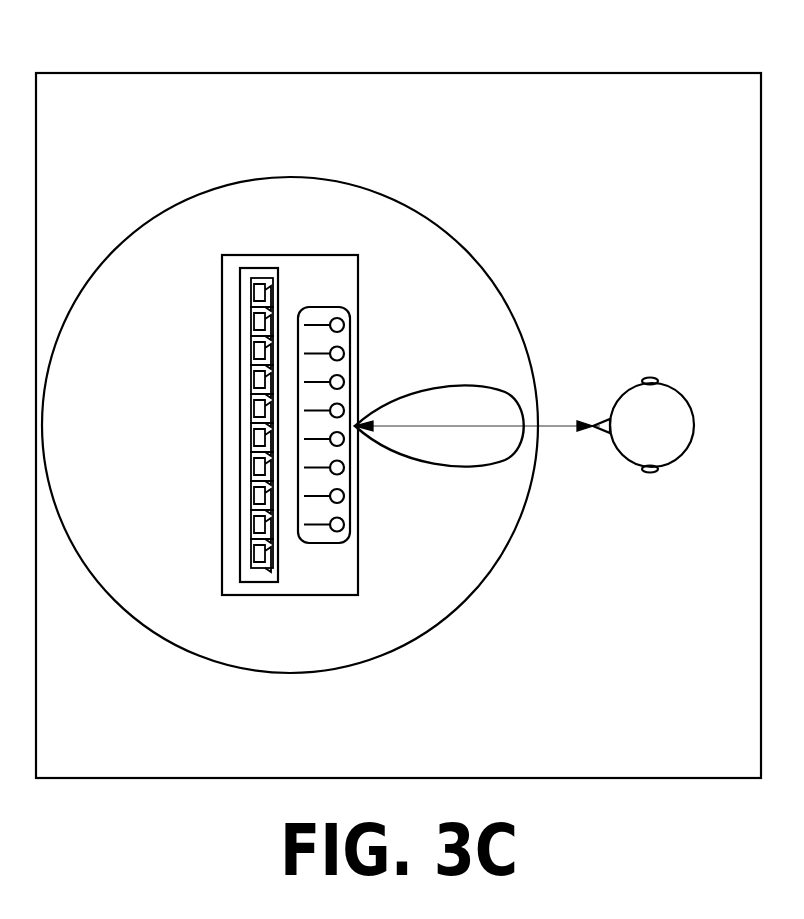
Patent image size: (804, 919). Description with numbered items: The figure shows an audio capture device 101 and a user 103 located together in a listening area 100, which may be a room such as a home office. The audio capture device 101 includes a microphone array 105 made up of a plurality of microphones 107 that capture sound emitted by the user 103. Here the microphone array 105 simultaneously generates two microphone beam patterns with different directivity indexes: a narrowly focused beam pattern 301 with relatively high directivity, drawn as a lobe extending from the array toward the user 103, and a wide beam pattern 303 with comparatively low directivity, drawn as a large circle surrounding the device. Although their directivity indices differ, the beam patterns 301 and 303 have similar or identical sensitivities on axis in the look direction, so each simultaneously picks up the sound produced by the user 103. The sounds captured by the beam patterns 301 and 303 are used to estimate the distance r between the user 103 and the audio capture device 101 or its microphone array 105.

The listening area 100 is at (62, 72).
The audio capture device 101 is at (312, 255).
The user 103 is at (650, 413).
The microphone array 105 is at (322, 545).
The microphone 107 is at (337, 318).
The narrowly focused beam pattern 301 is at (486, 387).
The wide beam pattern 303 is at (294, 176).